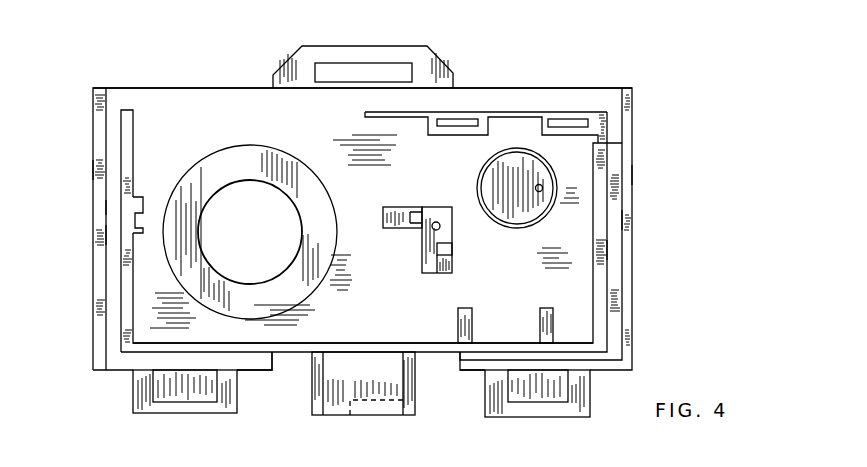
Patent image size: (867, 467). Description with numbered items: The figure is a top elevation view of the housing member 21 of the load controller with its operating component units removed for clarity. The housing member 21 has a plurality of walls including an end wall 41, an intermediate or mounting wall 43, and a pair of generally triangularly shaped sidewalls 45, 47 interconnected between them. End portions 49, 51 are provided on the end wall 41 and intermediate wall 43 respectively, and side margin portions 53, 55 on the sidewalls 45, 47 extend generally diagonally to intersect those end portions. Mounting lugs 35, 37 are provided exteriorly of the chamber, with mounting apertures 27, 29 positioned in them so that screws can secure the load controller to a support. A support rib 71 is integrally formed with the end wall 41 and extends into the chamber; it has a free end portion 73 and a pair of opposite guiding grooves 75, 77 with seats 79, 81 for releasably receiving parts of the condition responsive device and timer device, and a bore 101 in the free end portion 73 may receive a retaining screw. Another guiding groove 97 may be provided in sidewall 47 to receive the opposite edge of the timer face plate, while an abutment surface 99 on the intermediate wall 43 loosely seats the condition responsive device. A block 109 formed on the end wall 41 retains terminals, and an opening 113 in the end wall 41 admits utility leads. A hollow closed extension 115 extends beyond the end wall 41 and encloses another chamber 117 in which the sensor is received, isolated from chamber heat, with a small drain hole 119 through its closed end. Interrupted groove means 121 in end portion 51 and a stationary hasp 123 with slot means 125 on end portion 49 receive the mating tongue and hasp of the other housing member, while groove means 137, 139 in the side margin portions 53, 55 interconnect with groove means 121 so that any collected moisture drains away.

The housing member 21 is at (638, 104).
The mounting aperture 27 is at (528, 405).
The mounting aperture 29 is at (178, 405).
The mounting lug 35 is at (586, 398).
The mounting lug 37 is at (133, 398).
The end wall 41 is at (188, 125).
The intermediate wall 43 is at (388, 353).
The sidewall 45 is at (632, 174).
The sidewall 47 is at (93, 172).
The end portion 49 is at (190, 88).
The end portion 51 is at (340, 347).
The side margin portion 53 is at (628, 218).
The side margin portion 55 is at (104, 209).
The rib 71 is at (430, 243).
The free end portion 73 is at (432, 207).
The guiding groove 75 is at (452, 250).
The guiding groove 77 is at (412, 222).
The seat 79 is at (427, 280).
The seat 81 is at (384, 217).
The guiding groove 97 is at (146, 213).
The abutment surface 99 is at (546, 324).
The bore 101 is at (441, 226).
The block 109 is at (513, 112).
The opening 113 is at (268, 183).
The extension 115 is at (488, 162).
The chamber 117 is at (491, 186).
The drain hole 119 is at (541, 185).
The groove means 121 is at (245, 356).
The hasp 123 is at (346, 46).
The slot means 125 is at (406, 70).
The groove means 137 is at (612, 248).
The groove means 139 is at (112, 235).